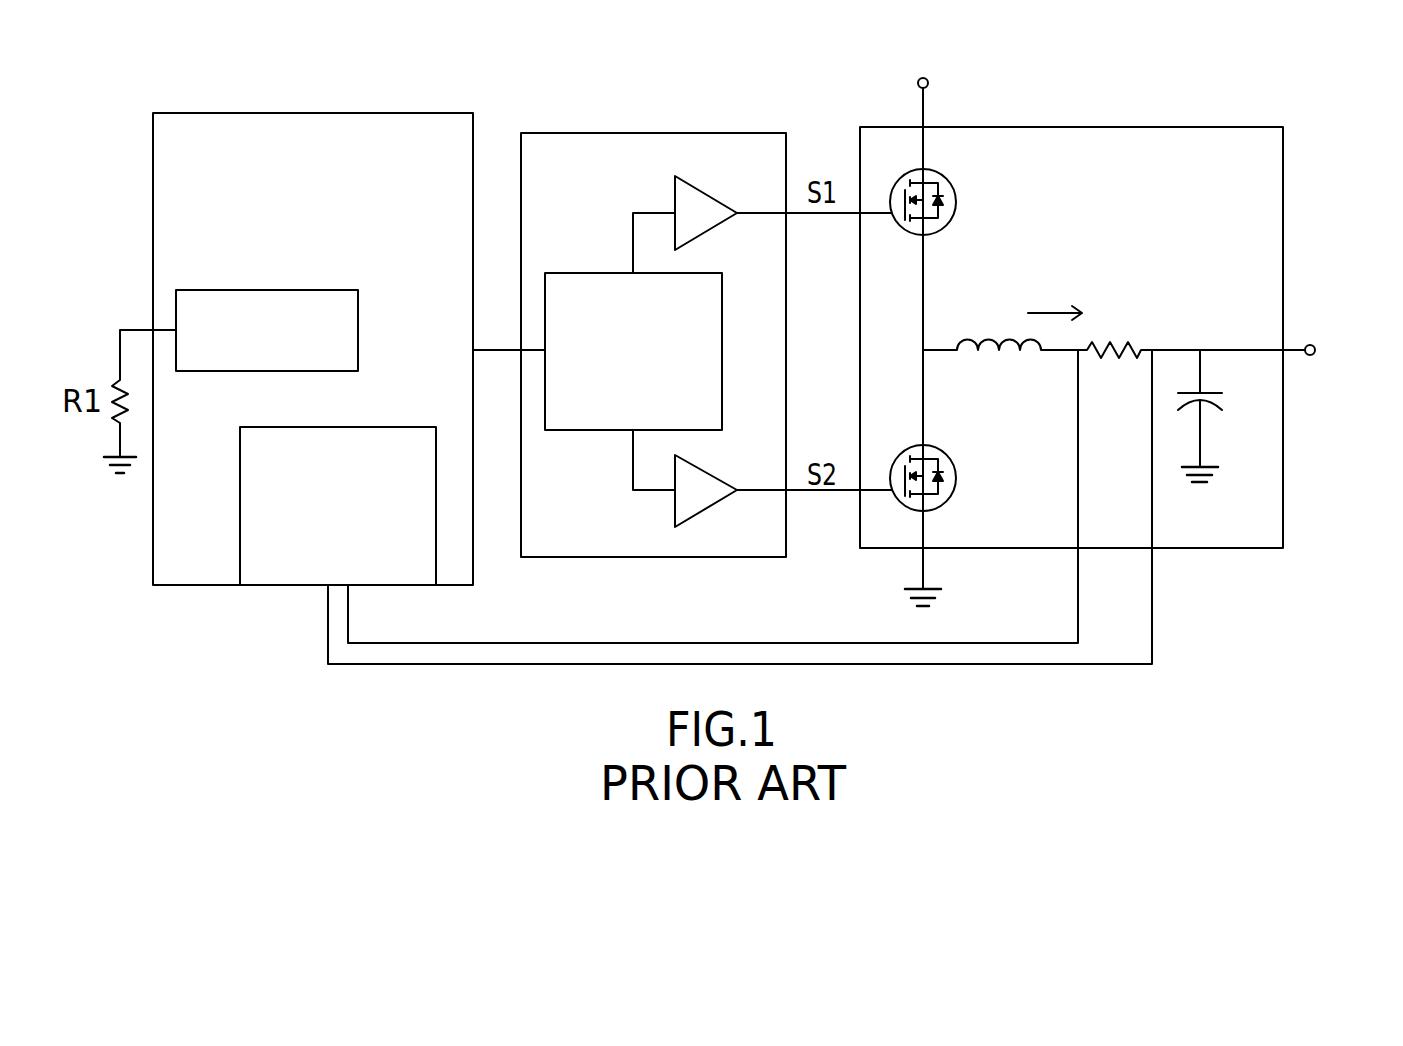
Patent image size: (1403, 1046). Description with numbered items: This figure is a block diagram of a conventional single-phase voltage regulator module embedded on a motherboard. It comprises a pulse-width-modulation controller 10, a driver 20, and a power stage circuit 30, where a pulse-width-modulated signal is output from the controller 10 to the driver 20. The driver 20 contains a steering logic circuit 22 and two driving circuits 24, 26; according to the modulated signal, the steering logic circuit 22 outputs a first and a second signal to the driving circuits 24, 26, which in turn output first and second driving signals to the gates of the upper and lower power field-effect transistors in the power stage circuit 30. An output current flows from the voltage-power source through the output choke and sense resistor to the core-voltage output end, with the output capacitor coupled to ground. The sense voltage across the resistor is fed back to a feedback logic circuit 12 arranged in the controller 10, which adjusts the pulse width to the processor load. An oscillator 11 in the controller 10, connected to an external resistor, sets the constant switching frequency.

The PWM controller 10 is at (418, 128).
The oscillator 11 is at (300, 303).
The feedback logic circuit 12 is at (368, 436).
The driver 20 is at (593, 149).
The steering logic circuit 22 is at (615, 281).
The driving circuit 24 is at (693, 201).
The driving circuit 26 is at (693, 488).
The power stage circuit 30 is at (1197, 134).